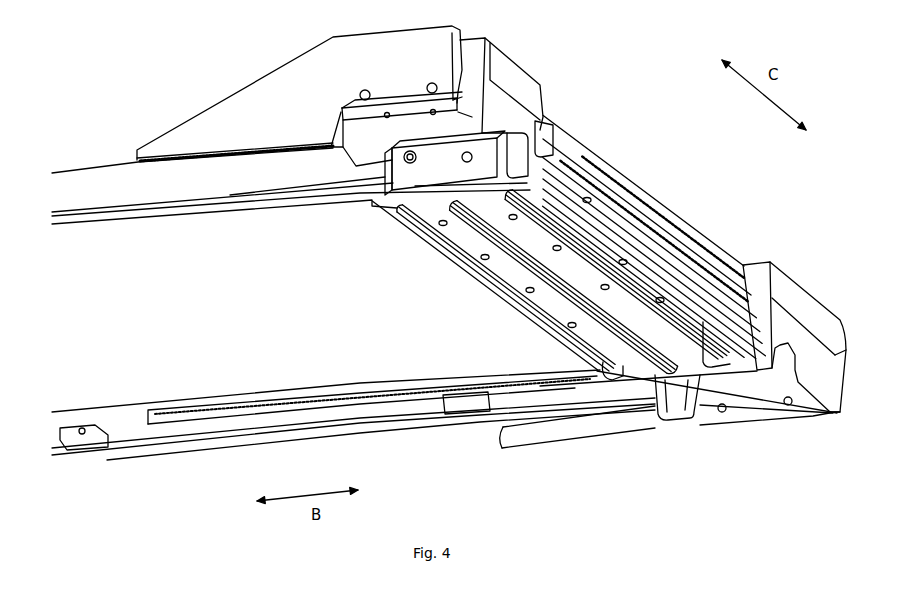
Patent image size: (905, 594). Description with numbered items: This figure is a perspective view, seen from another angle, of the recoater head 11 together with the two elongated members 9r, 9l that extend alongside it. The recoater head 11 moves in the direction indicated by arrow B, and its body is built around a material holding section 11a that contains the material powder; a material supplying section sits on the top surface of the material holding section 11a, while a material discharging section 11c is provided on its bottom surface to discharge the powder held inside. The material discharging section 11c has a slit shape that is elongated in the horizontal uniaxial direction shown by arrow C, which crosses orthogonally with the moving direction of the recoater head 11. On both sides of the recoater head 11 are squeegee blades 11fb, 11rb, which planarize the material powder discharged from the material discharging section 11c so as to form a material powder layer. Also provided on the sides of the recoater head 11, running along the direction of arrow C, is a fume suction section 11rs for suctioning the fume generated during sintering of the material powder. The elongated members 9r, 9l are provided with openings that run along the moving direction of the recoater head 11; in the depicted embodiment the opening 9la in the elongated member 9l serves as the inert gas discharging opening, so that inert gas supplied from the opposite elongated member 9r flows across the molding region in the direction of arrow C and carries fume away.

The elongated member 9r is at (83, 173).
The elongated member 9l is at (122, 410).
The opening 9la is at (322, 403).
The recoater head 11 is at (676, 167).
The fume suction section 11rs is at (692, 249).
The squeegee blade 11fb is at (412, 227).
The material holding section 11a is at (457, 230).
The material discharging section 11c is at (507, 260).
The squeegee blade 11rb is at (720, 365).